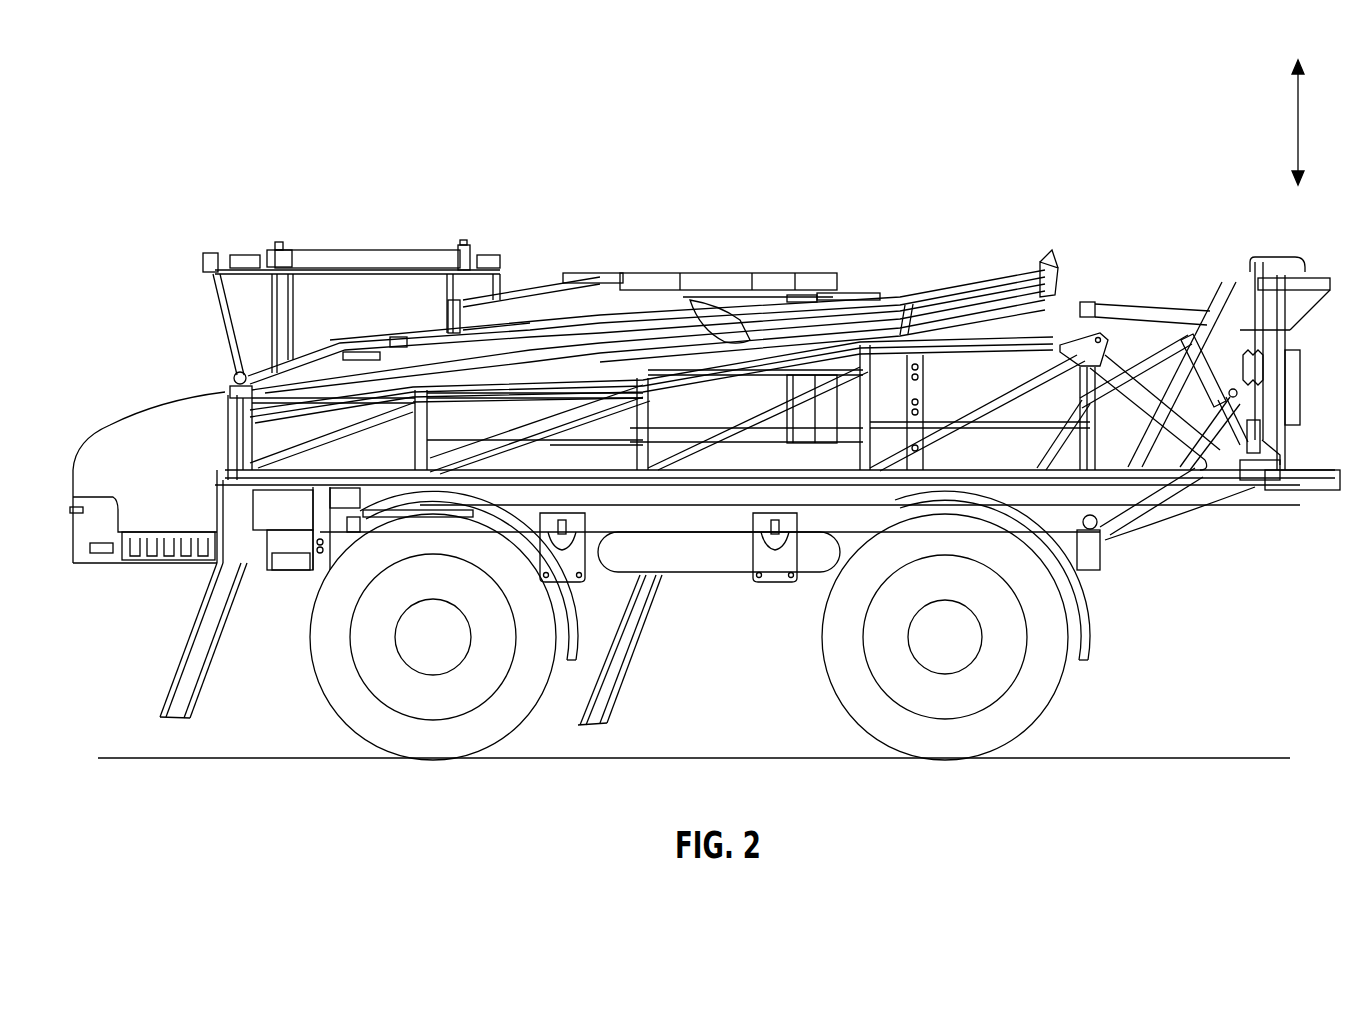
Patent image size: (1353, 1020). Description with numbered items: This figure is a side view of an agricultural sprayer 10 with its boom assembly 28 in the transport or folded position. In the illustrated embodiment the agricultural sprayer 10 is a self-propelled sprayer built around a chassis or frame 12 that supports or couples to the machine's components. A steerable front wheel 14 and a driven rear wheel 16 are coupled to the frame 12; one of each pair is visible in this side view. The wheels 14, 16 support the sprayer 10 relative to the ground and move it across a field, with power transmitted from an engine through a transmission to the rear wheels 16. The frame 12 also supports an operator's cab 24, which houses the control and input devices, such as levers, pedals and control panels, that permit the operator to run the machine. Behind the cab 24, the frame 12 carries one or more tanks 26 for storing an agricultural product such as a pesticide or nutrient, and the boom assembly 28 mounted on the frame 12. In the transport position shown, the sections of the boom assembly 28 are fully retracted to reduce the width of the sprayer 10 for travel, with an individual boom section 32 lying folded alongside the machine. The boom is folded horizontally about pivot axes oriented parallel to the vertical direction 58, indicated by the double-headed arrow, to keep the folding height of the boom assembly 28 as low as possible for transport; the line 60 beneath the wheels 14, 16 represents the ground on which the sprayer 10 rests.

The agricultural sprayer 10 is at (1097, 203).
The frame 12 is at (703, 555).
The front wheels 14 is at (512, 700).
The rear wheels 16 is at (1022, 710).
The operator's cab 24 is at (355, 250).
The tanks 26 is at (585, 310).
The boom assembly 28 is at (922, 250).
The boom section 32 is at (885, 292).
The vertical direction 58 is at (1298, 125).
The ground surface 60 is at (1220, 766).